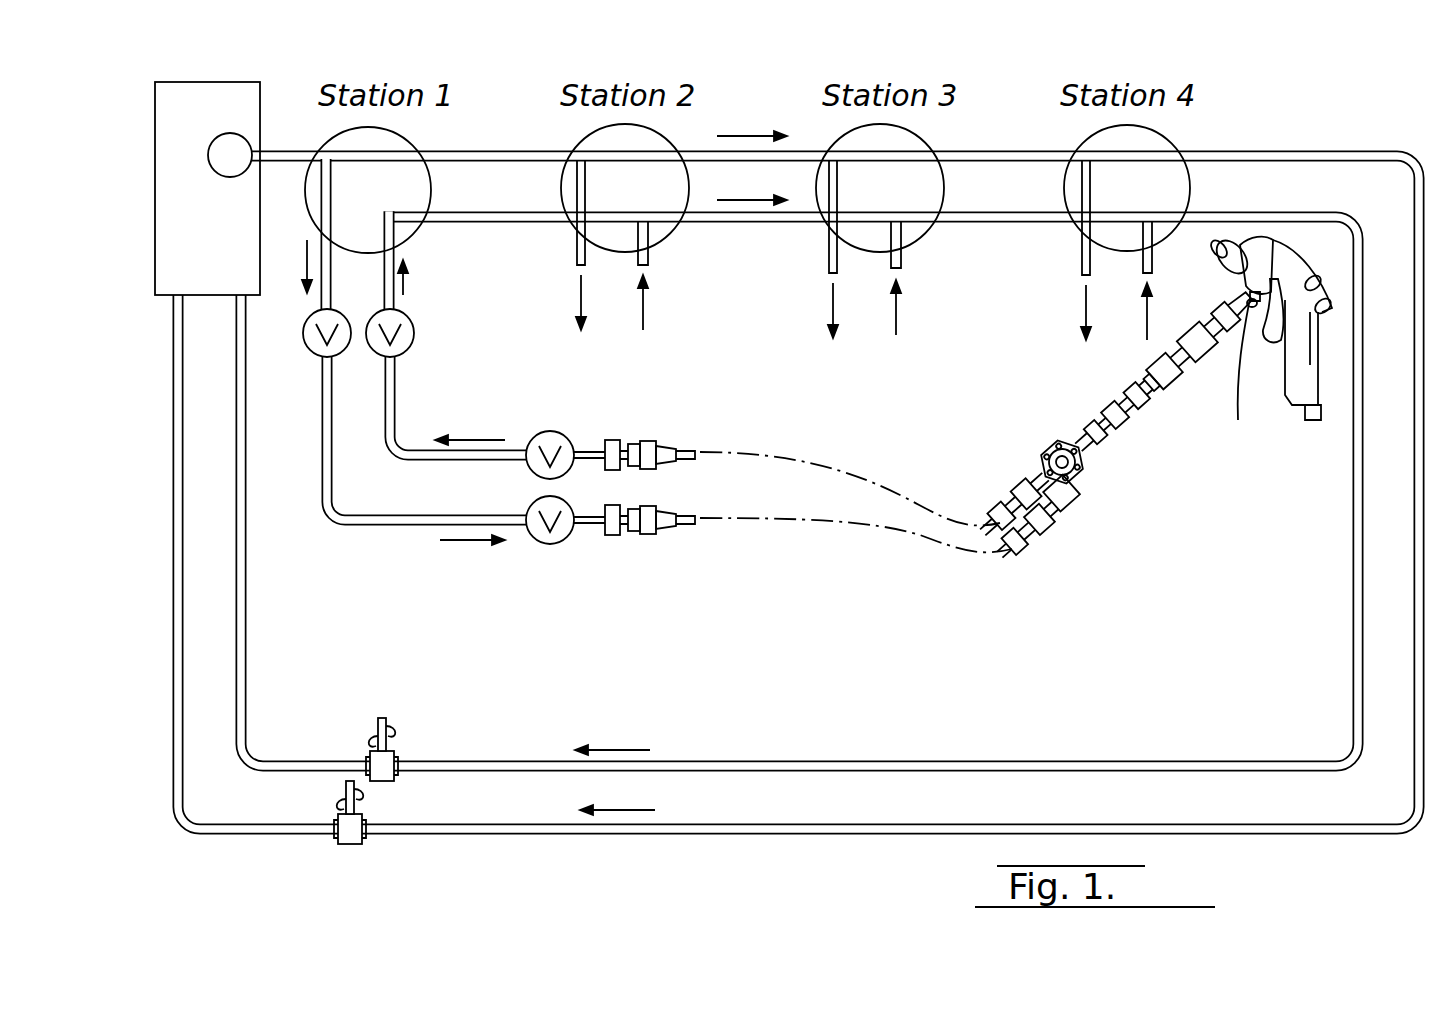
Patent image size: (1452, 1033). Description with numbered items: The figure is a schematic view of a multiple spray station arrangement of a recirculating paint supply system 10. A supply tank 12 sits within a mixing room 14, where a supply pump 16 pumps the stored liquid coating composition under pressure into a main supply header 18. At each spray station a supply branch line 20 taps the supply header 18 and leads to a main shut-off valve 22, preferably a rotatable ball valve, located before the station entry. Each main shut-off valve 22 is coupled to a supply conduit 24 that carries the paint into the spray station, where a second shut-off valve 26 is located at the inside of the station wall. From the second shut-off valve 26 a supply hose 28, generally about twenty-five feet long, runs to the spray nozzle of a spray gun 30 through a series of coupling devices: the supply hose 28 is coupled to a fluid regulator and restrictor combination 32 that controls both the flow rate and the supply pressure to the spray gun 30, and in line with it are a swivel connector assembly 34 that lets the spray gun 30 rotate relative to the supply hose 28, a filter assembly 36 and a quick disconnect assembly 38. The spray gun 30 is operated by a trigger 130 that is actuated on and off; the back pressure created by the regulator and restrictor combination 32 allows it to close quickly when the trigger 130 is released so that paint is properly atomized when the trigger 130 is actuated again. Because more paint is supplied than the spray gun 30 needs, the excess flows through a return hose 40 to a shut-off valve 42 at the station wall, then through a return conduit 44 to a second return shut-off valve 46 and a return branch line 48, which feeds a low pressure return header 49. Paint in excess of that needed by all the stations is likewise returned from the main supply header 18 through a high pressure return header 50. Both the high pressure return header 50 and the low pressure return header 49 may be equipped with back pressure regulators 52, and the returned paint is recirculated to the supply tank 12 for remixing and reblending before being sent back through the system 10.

The recirculating paint supply system 10 is at (1327, 100).
The supply tank 12 is at (236, 92).
The mixing room 14 is at (180, 82).
The supply pump 16 is at (218, 165).
The main supply header 18 is at (283, 153).
The supply branch line 20 is at (322, 205).
The main shut-off valve 22 is at (313, 348).
The supply conduit 24 is at (322, 428).
The second shut-off valve 26 is at (540, 544).
The supply hose 28 is at (734, 524).
The spray gun 30 is at (1271, 372).
The fluid regulator and restrictor combination 32 is at (1072, 482).
The swivel connector assembly 34 is at (1137, 372).
The filter assembly 36 is at (1130, 414).
The quick disconnect assembly 38 is at (1167, 327).
The return hose 40 is at (754, 452).
The shut-off valve 42 is at (548, 432).
The return conduit 44 is at (417, 452).
The second return shut-off valve 46 is at (414, 333).
The return branch line 48 is at (380, 258).
The low pressure return header 49 is at (484, 212).
The high pressure return header 50 is at (688, 836).
The back pressure regulator 52 is at (392, 750).
The trigger 130 is at (1262, 378).